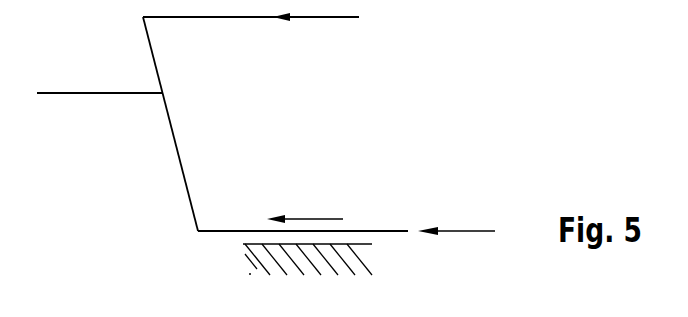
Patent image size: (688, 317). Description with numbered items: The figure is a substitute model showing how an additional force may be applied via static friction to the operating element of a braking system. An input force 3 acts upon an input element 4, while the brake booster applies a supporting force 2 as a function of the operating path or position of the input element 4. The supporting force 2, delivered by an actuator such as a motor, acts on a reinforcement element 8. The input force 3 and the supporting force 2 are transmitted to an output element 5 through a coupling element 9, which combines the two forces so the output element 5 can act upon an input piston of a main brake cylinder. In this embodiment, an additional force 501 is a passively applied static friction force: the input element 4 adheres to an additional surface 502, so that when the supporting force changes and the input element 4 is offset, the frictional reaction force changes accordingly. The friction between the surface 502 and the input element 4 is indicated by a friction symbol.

The supporting force 2 is at (324, 18).
The input force 3 is at (468, 230).
The input element 4 is at (245, 230).
The output element 5 is at (89, 95).
The reinforcement element 8 is at (218, 18).
The coupling element 9 is at (176, 143).
The additional force 501 is at (318, 218).
The additional surface 502 is at (250, 268).